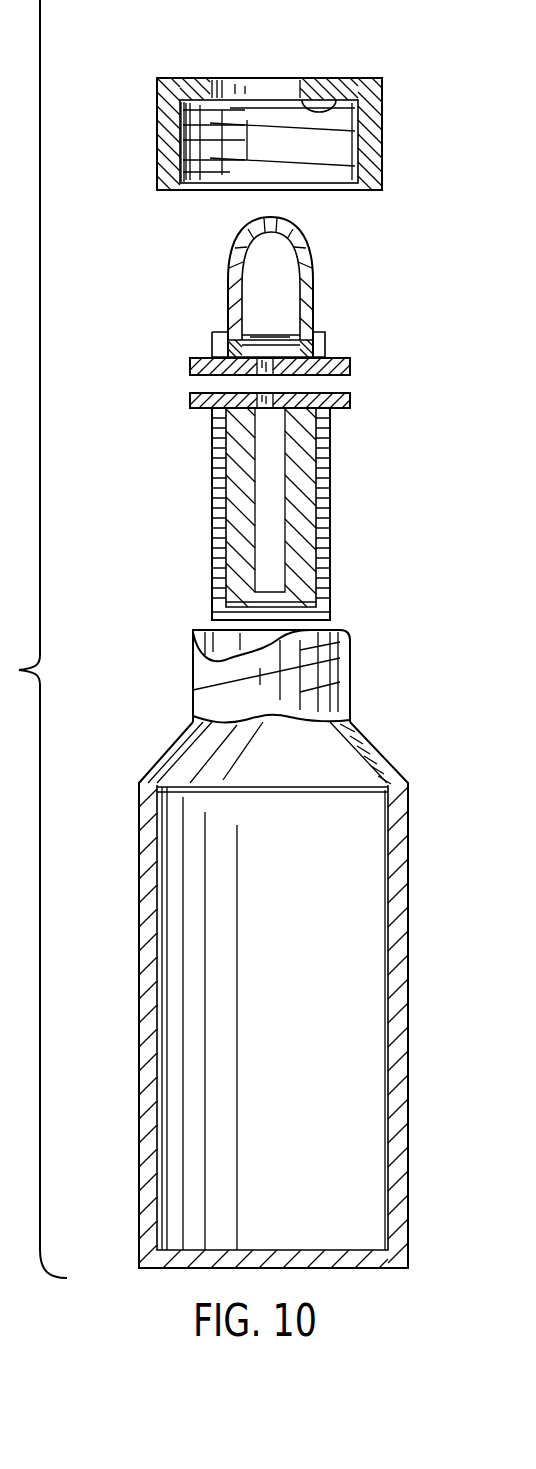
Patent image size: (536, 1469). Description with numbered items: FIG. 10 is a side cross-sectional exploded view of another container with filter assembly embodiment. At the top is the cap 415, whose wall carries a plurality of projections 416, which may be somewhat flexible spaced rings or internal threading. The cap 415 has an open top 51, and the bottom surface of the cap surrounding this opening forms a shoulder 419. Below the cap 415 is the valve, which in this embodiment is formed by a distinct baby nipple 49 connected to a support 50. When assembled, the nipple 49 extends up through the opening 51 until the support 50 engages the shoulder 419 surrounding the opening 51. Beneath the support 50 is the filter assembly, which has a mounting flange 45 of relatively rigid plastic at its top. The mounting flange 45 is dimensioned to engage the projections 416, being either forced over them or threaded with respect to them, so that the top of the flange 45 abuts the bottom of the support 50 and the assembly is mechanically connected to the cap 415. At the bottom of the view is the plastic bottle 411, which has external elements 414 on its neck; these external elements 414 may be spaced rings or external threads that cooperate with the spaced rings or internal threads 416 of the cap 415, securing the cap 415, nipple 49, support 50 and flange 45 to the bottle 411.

The cap 415 is at (146, 70).
The open top 51 is at (260, 85).
The shoulder 419 is at (302, 97).
The projections 416 is at (188, 194).
The baby nipple 49 is at (331, 278).
The support 50 is at (318, 345).
The mounting flange 45 is at (327, 394).
The external elements 414 is at (193, 680).
The plastic bottle 411 is at (125, 1085).